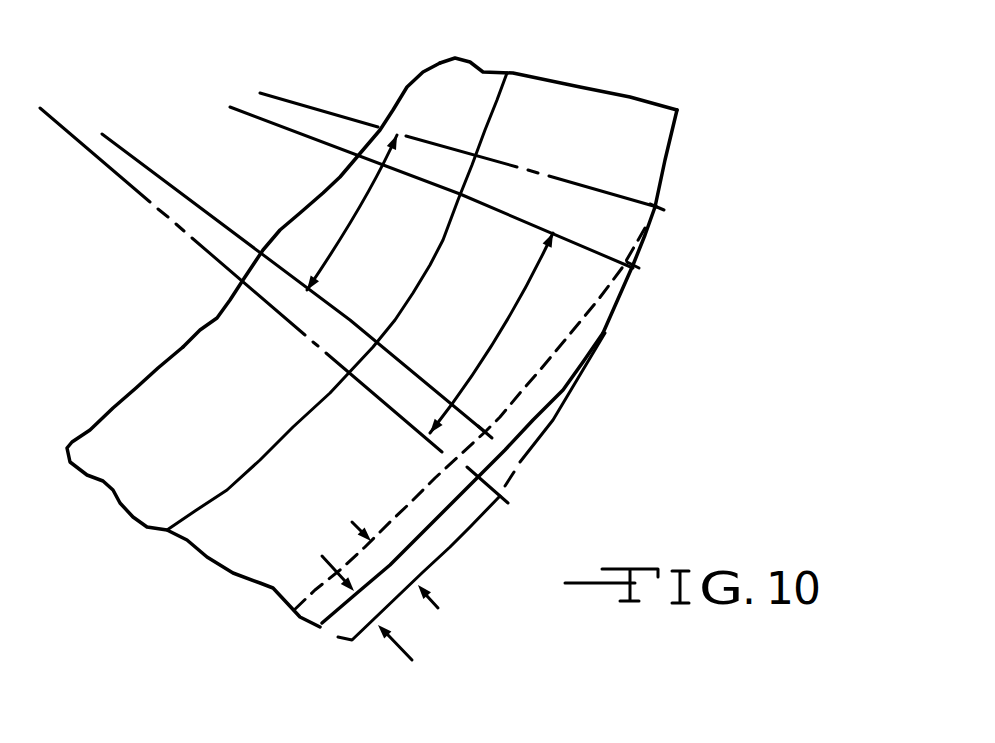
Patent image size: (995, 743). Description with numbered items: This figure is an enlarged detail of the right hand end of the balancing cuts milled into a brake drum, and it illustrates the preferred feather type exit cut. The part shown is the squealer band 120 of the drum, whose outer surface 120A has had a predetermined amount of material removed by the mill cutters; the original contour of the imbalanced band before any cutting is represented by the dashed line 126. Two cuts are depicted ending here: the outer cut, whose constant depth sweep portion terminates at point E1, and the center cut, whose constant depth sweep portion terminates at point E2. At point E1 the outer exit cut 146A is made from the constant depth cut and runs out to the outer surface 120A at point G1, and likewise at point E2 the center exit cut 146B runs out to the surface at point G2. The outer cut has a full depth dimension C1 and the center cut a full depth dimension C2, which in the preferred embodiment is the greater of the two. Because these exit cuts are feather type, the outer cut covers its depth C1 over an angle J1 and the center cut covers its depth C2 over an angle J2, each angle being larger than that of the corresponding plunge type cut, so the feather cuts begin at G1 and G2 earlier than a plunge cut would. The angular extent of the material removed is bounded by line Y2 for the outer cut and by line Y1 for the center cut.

The squealer band 120 is at (207, 353).
The outer surface of the squealer band 120A is at (673, 153).
The dashed line 126 is at (470, 527).
The outer exit cut 146A is at (575, 429).
The center exit cut 146B is at (663, 241).
The line Y1 is at (343, 116).
The line Y2 is at (283, 122).
The angle J1 is at (487, 353).
The angle J2 is at (377, 197).
The point G1 is at (633, 265).
The point G2 is at (657, 207).
The point E1 is at (483, 477).
The point E2 is at (483, 432).
The full depth dimension C1 is at (328, 630).
The full depth dimension C2 is at (392, 560).